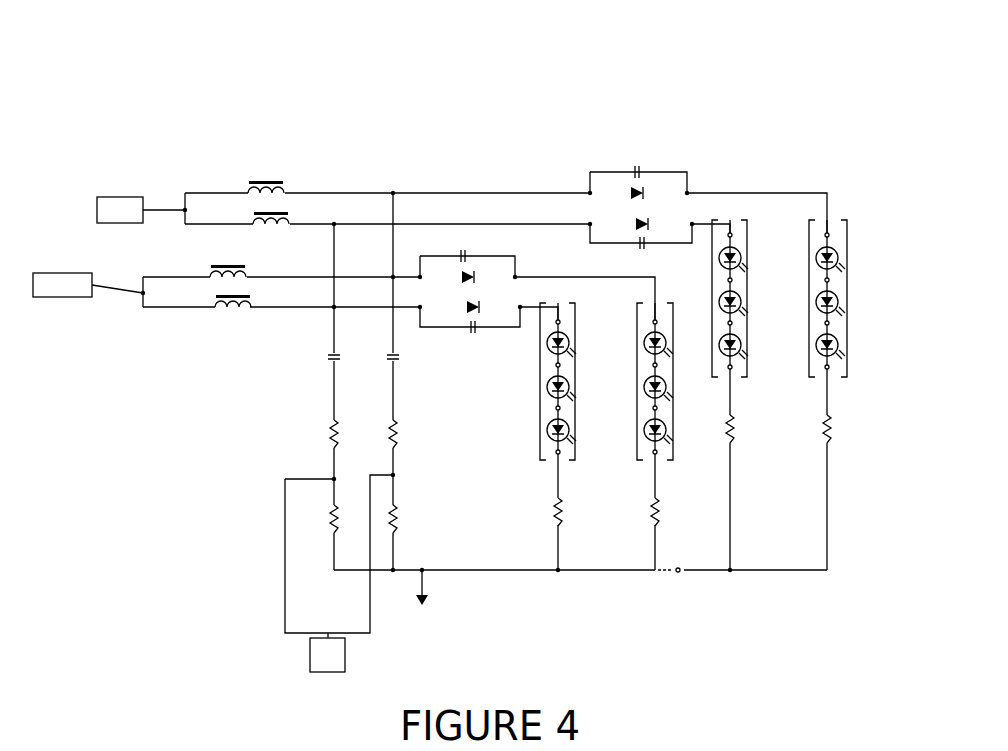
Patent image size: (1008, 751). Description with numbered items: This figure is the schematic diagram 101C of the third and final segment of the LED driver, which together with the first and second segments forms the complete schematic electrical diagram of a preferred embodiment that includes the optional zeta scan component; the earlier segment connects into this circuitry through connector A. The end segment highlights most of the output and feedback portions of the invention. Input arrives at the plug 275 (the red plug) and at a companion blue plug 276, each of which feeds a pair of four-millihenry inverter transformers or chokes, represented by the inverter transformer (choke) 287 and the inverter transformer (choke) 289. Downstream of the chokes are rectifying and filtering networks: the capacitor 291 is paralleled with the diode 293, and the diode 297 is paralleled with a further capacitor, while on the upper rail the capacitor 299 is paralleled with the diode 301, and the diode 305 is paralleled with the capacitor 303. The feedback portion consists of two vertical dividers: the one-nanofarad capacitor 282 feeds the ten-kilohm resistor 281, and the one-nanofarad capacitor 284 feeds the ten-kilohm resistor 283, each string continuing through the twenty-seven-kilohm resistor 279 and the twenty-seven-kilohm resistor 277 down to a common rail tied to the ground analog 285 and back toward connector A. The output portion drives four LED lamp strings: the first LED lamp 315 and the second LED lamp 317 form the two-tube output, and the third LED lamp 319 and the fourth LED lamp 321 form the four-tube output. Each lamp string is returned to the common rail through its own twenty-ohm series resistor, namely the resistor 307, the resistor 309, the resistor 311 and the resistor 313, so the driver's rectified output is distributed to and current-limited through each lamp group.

The schematic diagram 101C is at (468, 358).
The plug 275 is at (95, 188).
The BLUE1 input 276 is at (58, 264).
The inverter transformer (choke) 287 is at (248, 169).
The inverter transformer (choke) 289 is at (369, 282).
The capacitor 291 is at (473, 250).
The diode 293 is at (512, 266).
The diode 297 is at (483, 303).
The capacitor 299 is at (648, 162).
The diode 301 is at (682, 187).
The diode 305 is at (667, 220).
The capacitor 303 is at (645, 249).
The capacitor 282 is at (291, 363).
The resistor 281 is at (290, 430).
The capacitor 284 is at (434, 363).
The resistor 283 is at (435, 438).
The resistor 279 is at (317, 554).
The resistor 277 is at (436, 522).
The ground analog 285 is at (454, 596).
The first LED lamp 315 is at (588, 381).
The second LED lamp 317 is at (631, 381).
The third LED lamp 319 is at (760, 298).
The fourth LED lamp 321 is at (807, 298).
The resistor 307 is at (590, 508).
The resistor 309 is at (691, 508).
The resistor 311 is at (767, 429).
The resistor 313 is at (867, 429).